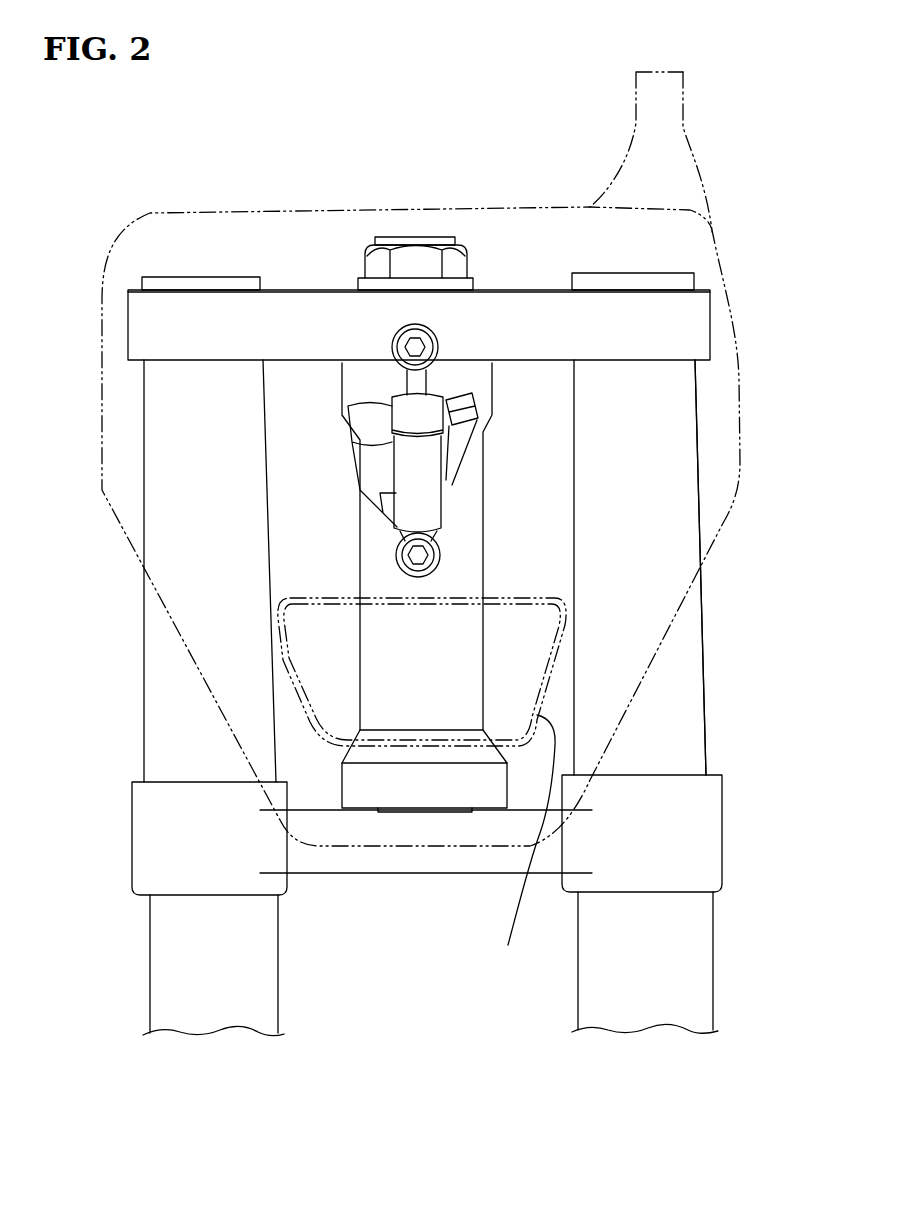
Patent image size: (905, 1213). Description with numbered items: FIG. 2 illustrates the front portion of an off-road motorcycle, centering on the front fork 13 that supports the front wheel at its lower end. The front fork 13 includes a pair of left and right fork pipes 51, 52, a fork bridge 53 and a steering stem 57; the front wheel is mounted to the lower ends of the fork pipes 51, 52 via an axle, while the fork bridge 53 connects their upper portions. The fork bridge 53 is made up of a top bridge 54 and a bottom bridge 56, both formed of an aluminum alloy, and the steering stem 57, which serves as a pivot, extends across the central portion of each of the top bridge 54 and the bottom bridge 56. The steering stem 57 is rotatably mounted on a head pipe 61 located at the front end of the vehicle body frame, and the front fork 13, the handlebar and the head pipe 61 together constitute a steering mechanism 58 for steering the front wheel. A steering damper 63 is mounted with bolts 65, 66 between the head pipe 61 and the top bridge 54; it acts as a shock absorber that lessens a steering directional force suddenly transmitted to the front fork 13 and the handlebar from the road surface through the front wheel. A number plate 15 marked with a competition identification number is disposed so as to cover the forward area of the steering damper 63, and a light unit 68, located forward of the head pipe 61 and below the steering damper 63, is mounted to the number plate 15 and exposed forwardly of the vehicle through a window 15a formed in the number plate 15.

The front fork 13 is at (136, 397).
The number plate 15 is at (96, 584).
The window 15a is at (310, 722).
The fork pipe 51 is at (152, 958).
The fork pipe 52 is at (697, 961).
The fork bridge 53 is at (303, 305).
The top bridge 54 is at (515, 305).
The bottom bridge 56 is at (145, 852).
The steering stem 57 is at (410, 237).
The steering mechanism 58 is at (720, 650).
The head pipe 61 is at (372, 572).
The steering damper 63 is at (350, 462).
The bolt 65 is at (430, 347).
The bolt 66 is at (445, 556).
The light unit 68 is at (526, 846).